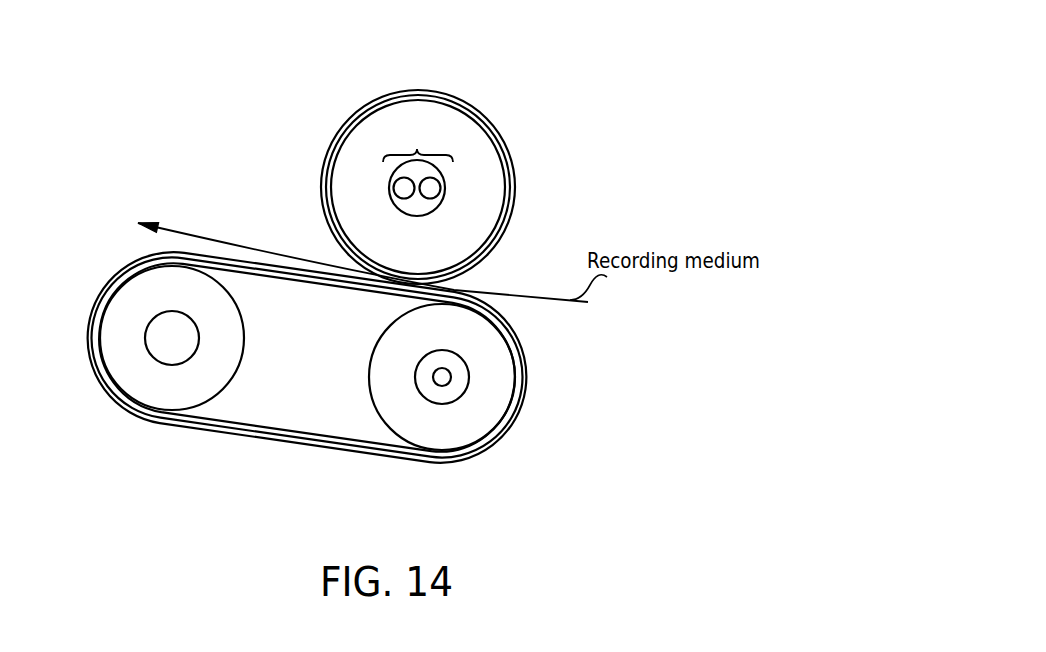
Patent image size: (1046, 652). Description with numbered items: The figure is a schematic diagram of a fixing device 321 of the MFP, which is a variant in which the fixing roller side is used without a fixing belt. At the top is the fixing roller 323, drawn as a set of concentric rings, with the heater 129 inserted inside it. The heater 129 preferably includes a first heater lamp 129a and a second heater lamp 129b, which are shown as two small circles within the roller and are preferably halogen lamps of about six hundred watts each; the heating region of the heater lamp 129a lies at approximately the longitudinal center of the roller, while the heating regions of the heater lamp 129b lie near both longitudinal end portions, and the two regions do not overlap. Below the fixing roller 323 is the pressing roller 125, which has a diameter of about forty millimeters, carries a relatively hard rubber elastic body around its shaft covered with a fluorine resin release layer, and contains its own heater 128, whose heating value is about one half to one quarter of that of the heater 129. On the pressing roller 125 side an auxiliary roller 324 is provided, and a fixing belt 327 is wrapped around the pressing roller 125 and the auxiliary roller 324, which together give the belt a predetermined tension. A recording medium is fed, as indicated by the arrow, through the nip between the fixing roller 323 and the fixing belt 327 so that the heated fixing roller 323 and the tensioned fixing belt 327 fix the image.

The fixing device 321 is at (250, 100).
The fixing roller 323 is at (340, 165).
The heater 129 is at (417, 149).
The first heater lamp 129a is at (440, 203).
The second heater lamp 129b is at (392, 204).
The fixing belt 327 is at (335, 450).
The auxiliary roller 324 is at (103, 335).
The pressing roller 125 is at (505, 377).
The heater 128 is at (446, 385).